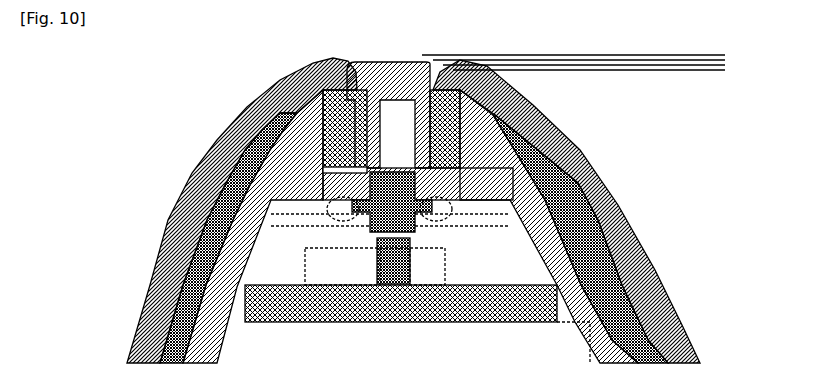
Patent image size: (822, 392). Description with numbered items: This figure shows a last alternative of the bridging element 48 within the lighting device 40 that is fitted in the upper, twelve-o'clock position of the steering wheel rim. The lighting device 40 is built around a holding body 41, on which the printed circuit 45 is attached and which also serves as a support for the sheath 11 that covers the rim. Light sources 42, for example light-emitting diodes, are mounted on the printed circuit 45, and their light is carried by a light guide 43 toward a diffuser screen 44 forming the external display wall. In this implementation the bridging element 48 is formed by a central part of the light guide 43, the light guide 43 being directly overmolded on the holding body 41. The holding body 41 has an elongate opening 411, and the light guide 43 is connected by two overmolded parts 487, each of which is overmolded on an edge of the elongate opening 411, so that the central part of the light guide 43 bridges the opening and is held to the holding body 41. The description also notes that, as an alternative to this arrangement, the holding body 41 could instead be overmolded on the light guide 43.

The sheath 11 is at (157, 287).
The lighting device 40 is at (425, 212).
The holding body 41 is at (470, 147).
The elongate opening 411 is at (368, 172).
The light sources 42 is at (410, 257).
The light guide 43 is at (415, 172).
The diffuser screen 44 is at (428, 102).
The printed circuit 45 is at (480, 300).
The bridging element 48 is at (347, 216).
The overmolded parts 487 is at (360, 200).